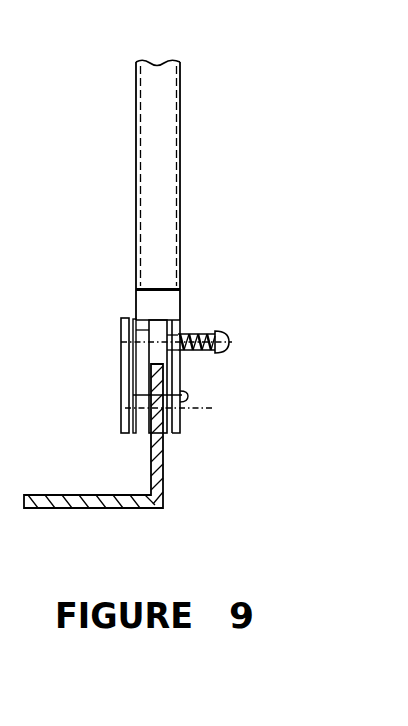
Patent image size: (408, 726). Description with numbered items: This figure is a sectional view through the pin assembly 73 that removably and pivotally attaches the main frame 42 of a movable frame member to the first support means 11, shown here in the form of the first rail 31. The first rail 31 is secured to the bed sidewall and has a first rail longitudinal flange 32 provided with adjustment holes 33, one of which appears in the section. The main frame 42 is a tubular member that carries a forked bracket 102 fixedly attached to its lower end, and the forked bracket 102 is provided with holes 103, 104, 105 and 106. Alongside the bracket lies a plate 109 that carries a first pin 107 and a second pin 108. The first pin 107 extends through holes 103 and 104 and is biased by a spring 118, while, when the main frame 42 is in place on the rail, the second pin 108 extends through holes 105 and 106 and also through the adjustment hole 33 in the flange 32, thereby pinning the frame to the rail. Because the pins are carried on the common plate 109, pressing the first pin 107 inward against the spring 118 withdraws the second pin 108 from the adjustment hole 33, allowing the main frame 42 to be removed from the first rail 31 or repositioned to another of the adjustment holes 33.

The first support means 11 is at (101, 511).
The first rail 31 is at (182, 491).
The first rail longitudinal flange 32 is at (150, 452).
The adjustment holes 33 is at (165, 445).
The main frame 42 is at (190, 212).
The pin assembly 73 is at (231, 339).
The forked bracket 102 is at (182, 302).
The hole 103 is at (180, 318).
The hole 104 is at (137, 315).
The hole 105 is at (130, 378).
The hole 106 is at (182, 418).
The first pin 107 is at (227, 347).
The second pin 108 is at (185, 399).
The plate 109 is at (120, 325).
The spring 118 is at (190, 336).